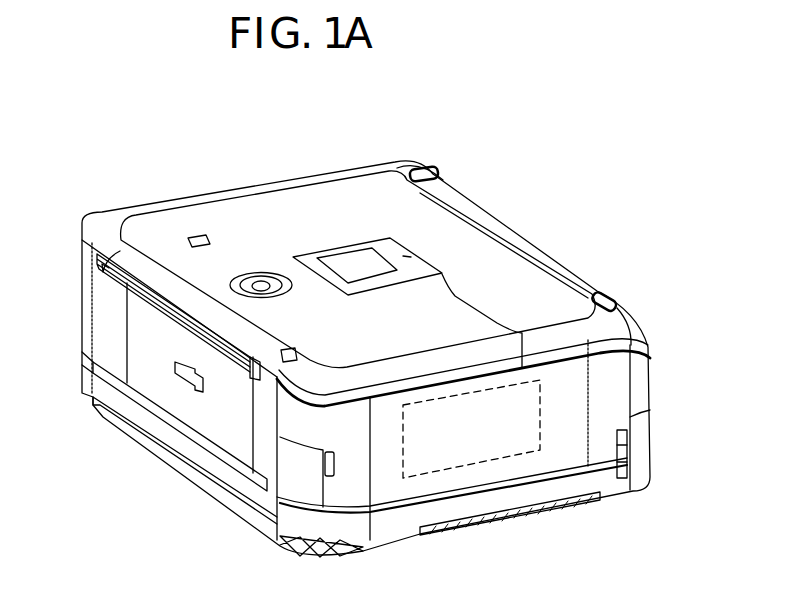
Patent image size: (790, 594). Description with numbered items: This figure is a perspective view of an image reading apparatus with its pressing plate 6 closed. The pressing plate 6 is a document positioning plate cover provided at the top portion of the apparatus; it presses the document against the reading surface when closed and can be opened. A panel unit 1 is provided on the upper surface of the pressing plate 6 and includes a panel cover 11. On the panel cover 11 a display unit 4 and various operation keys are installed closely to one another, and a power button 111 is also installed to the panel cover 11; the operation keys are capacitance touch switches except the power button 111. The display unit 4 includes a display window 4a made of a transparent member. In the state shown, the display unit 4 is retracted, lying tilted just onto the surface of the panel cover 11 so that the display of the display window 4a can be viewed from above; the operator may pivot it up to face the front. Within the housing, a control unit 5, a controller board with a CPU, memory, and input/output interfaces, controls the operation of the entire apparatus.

The panel unit 1 is at (259, 206).
The panel cover 11 is at (220, 212).
The power button 111 is at (190, 241).
The display unit 4 is at (369, 237).
The display window 4a is at (380, 258).
The pressing plate 6 is at (97, 257).
The control unit 5 is at (512, 440).